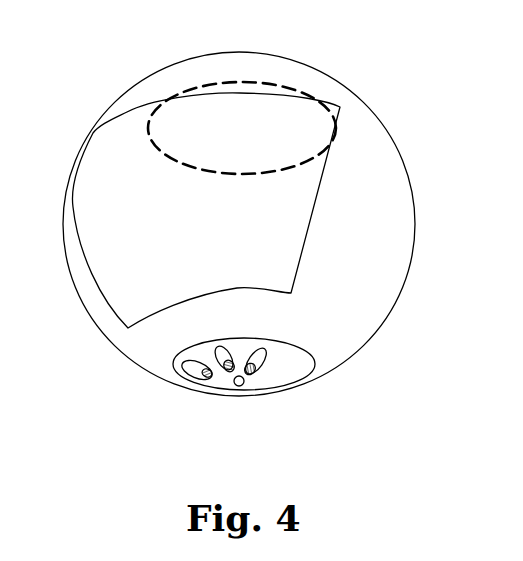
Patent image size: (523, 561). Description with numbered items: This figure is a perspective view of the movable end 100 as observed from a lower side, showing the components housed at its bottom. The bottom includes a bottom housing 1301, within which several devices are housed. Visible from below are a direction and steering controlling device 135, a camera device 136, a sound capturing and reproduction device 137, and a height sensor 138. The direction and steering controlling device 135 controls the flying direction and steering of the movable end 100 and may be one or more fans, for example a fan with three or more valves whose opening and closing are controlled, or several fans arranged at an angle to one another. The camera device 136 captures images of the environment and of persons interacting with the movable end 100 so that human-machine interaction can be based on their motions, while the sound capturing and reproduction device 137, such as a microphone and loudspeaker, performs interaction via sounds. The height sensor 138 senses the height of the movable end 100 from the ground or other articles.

The movable end 100 is at (59, 65).
The bottom housing 1301 is at (318, 384).
The direction and steering controlling device 135 is at (185, 385).
The camera device 136 is at (224, 378).
The sound capturing and reproduction device 137 is at (266, 379).
The height sensor 138 is at (246, 392).